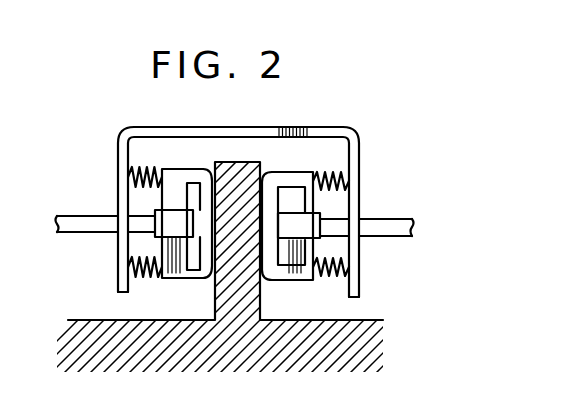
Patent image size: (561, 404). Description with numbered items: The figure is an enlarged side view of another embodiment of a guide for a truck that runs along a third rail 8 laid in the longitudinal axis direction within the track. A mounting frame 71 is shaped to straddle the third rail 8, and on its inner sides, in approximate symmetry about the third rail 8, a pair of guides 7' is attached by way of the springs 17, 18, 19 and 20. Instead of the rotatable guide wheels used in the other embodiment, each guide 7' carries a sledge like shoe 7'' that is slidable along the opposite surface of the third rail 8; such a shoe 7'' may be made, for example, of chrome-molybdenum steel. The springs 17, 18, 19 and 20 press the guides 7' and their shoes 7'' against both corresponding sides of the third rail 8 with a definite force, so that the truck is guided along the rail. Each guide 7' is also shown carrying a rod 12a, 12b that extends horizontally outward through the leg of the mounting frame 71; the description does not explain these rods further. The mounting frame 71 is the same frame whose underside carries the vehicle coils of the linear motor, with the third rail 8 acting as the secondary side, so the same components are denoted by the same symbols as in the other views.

The third rail 8 is at (240, 265).
The mounting frame 71 is at (337, 127).
The guide 7' is at (239, 208).
The sledge like shoe 7'' is at (247, 265).
The right actuating rod with piston 12a is at (401, 220).
The left actuating rod with piston 12b is at (90, 232).
The spring 19 is at (140, 168).
The spring 20 is at (150, 277).
The spring 17 is at (345, 170).
The spring 18 is at (360, 288).